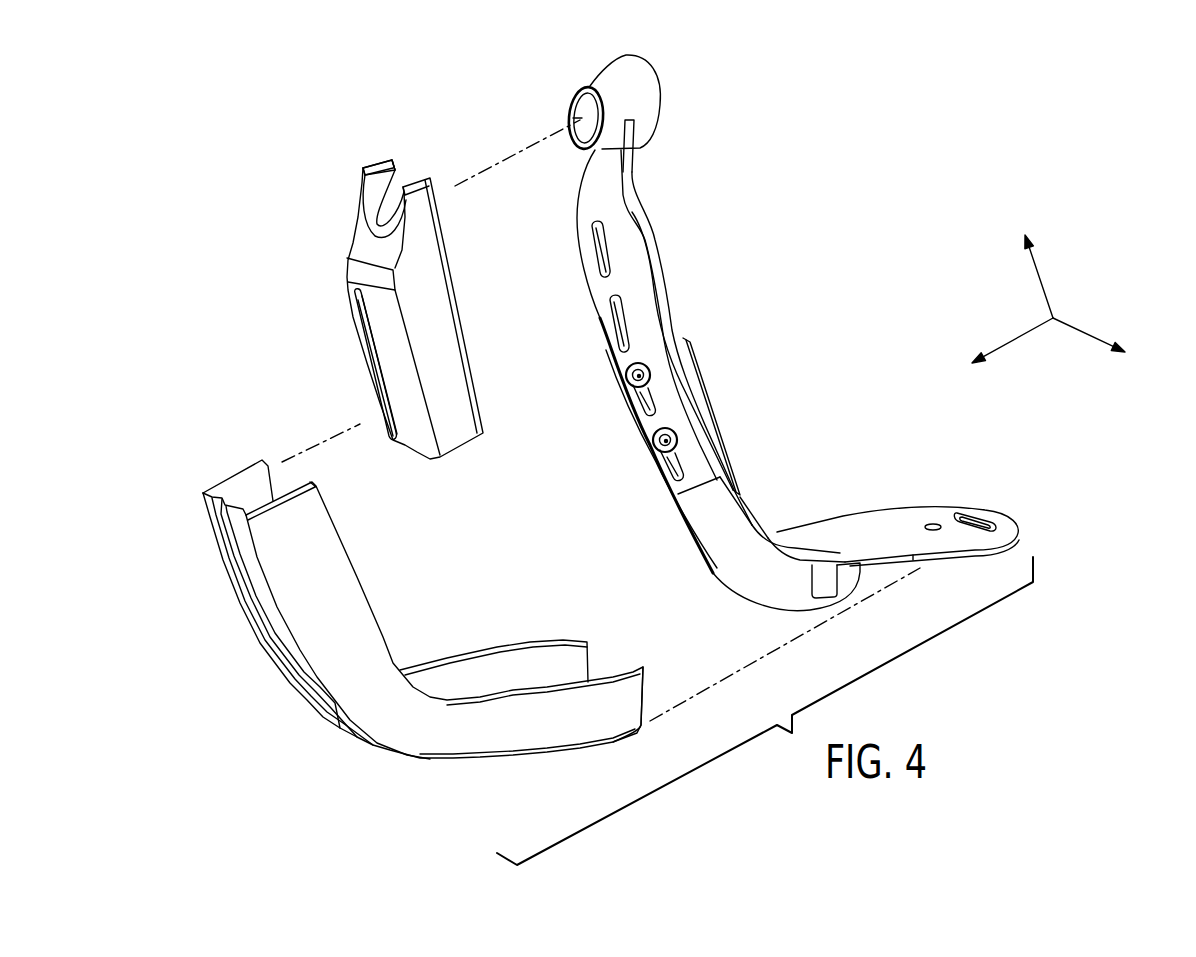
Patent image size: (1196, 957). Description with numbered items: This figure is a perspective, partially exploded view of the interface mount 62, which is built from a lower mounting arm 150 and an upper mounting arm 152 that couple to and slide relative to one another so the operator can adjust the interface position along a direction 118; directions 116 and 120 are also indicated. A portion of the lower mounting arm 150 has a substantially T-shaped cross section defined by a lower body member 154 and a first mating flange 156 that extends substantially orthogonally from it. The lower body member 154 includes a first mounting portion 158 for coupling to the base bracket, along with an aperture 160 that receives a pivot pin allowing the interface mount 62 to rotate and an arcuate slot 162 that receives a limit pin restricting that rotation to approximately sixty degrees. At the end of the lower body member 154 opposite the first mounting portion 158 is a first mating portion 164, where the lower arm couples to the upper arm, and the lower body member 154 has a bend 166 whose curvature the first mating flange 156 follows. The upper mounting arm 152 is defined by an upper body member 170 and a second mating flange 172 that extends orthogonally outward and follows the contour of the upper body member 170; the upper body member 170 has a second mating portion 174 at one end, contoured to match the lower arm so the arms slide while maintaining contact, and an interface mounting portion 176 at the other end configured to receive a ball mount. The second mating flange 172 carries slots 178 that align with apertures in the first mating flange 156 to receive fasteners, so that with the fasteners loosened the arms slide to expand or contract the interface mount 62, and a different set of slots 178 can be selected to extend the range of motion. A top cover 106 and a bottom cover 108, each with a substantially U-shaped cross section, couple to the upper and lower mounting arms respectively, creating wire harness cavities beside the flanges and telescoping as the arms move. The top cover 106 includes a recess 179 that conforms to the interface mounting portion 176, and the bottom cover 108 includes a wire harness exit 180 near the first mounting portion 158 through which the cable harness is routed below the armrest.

The interface mount 62 is at (844, 305).
The top cover 106 is at (375, 238).
The bottom cover 108 is at (385, 757).
The direction 116 is at (1018, 338).
The direction 118 is at (1037, 280).
The third direction 120 is at (1083, 330).
The lower mounting arm 150 is at (757, 490).
The upper mounting arm 152 is at (660, 273).
The lower body member 154 is at (737, 468).
The first mating flange 156 is at (743, 575).
The first mounting portion 158 is at (892, 508).
The aperture 160 is at (933, 524).
The arcuate slot 162 is at (980, 523).
The first mating portion 164 is at (693, 360).
The bend 166 is at (793, 547).
The upper body member 170 is at (652, 242).
The second mating flange 172 is at (595, 195).
The second mating portion 174 is at (710, 423).
The interface mounting portion 176 is at (653, 95).
The slots 178 is at (618, 323).
The recess 179 is at (412, 165).
The wire harness exit 180 is at (624, 650).